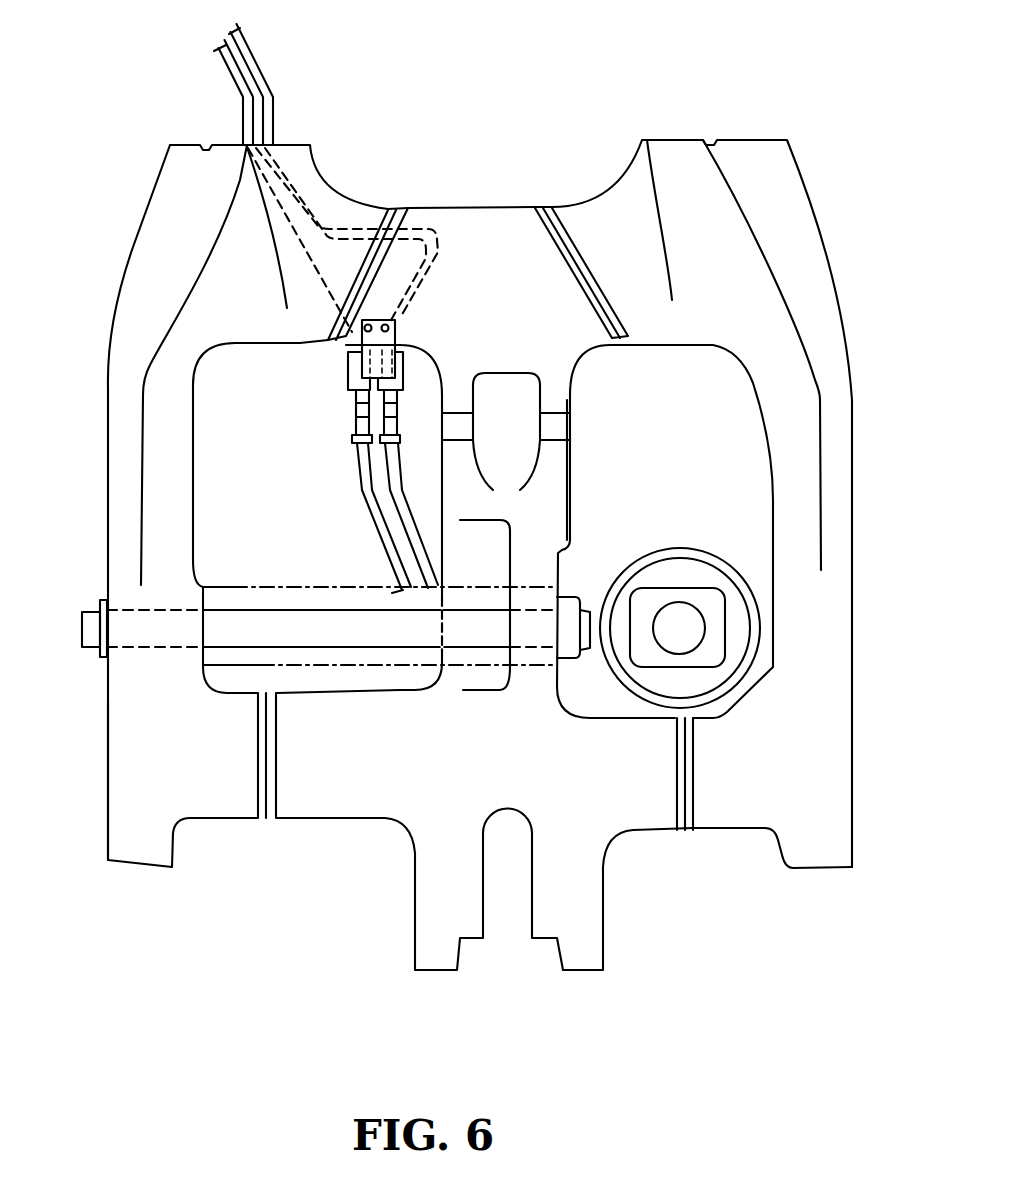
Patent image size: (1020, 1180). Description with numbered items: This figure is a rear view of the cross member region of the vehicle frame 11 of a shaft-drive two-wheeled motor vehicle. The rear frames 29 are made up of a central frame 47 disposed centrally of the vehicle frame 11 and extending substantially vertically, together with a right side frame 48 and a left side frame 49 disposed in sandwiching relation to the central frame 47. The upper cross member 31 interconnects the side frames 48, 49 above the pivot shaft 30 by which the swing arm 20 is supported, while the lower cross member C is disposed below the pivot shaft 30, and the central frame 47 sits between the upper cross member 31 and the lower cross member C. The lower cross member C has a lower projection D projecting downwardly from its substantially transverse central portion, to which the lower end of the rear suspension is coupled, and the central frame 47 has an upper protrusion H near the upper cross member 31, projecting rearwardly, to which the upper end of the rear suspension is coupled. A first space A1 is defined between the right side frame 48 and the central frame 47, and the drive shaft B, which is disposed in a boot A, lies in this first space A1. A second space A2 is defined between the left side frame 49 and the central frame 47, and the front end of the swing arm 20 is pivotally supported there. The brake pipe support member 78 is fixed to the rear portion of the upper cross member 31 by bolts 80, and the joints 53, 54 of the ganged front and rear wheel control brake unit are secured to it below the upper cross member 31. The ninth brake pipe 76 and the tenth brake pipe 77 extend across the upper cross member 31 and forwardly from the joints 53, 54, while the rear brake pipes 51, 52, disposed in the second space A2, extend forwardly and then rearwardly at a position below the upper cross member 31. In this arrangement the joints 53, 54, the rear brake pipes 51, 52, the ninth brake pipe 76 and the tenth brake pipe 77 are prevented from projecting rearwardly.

The vehicle frame 11 is at (803, 167).
The rear frames 29 is at (153, 247).
The upper cross member 31 is at (473, 212).
The upper protrusion H is at (533, 367).
The ninth brake pipe 76 is at (253, 58).
The tenth brake pipe 77 is at (240, 93).
The bolts 80 is at (369, 321).
The brake pipe support member 78 is at (396, 333).
The joint 53 is at (348, 360).
The joint 54 is at (405, 362).
The rear brake pipe 52 is at (357, 455).
The rear brake pipe 51 is at (392, 466).
The second space A2 is at (217, 455).
The first space A1 is at (727, 456).
The central frame 47 is at (570, 500).
The boot A is at (687, 553).
The drive shaft B is at (697, 653).
The pivot shaft 30 is at (100, 610).
The swing arm 20 is at (230, 585).
The left side frame 49 is at (128, 707).
The right side frame 48 is at (838, 702).
The lower cross member C is at (332, 778).
The lower projection D is at (572, 917).